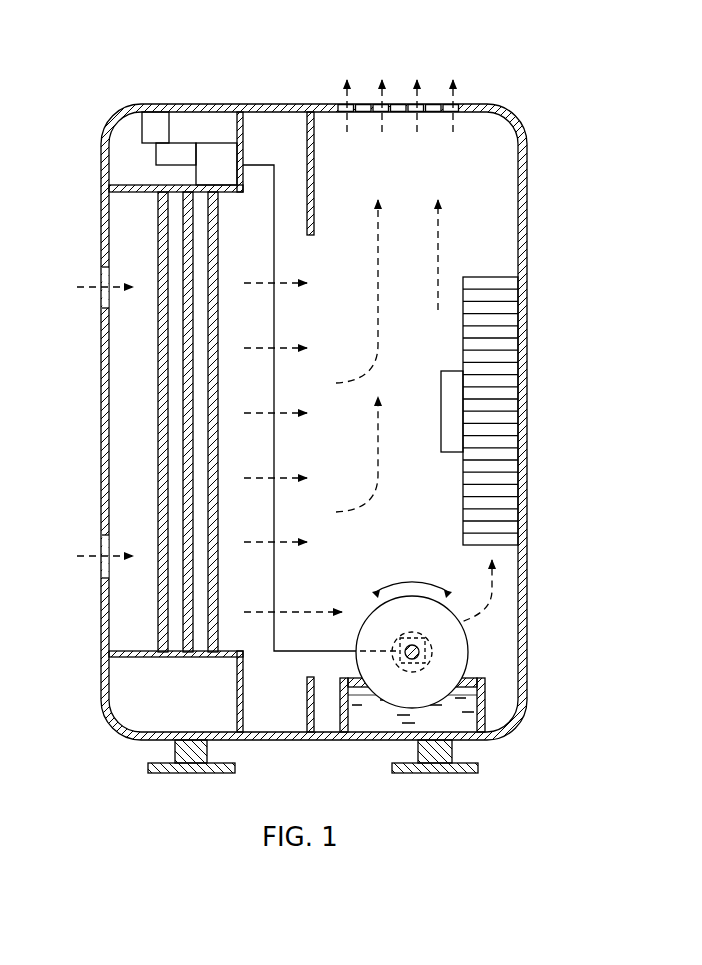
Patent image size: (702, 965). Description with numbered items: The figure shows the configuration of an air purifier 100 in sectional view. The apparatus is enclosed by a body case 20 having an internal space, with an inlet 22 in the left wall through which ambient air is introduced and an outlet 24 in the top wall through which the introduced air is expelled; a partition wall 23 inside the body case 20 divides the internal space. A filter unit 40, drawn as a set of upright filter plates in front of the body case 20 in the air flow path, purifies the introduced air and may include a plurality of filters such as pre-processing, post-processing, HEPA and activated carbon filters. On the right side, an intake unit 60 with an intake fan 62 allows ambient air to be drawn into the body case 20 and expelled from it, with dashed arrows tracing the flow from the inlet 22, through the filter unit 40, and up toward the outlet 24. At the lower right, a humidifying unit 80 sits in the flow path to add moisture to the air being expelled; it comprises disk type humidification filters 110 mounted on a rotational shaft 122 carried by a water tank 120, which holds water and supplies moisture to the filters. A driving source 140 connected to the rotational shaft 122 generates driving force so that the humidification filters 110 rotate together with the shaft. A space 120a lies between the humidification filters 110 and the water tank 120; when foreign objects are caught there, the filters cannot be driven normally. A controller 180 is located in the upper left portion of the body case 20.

The air purifier 100 is at (97, 57).
The body case 20 is at (101, 483).
The inlet 22 is at (101, 270).
The partition wall 23 is at (306, 168).
The outlet 24 is at (387, 110).
The filter unit 40 is at (148, 432).
The intake unit 60 is at (514, 375).
The intake fan 62 is at (498, 287).
The humidifying unit 80 is at (454, 694).
The humidification filters 110 is at (443, 633).
The water tank 120 is at (438, 734).
The space 120a is at (363, 687).
The rotational shaft 122 is at (422, 649).
The driving source 140 is at (405, 667).
The controller 180 is at (215, 157).